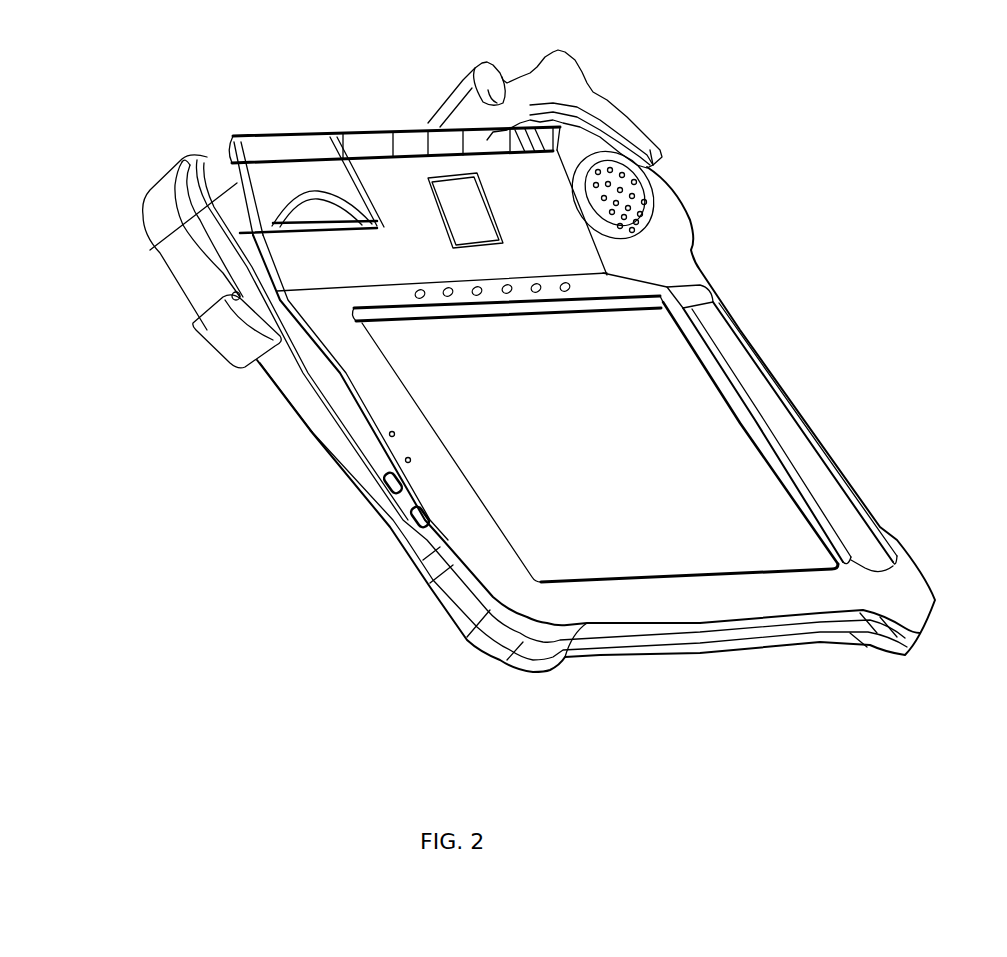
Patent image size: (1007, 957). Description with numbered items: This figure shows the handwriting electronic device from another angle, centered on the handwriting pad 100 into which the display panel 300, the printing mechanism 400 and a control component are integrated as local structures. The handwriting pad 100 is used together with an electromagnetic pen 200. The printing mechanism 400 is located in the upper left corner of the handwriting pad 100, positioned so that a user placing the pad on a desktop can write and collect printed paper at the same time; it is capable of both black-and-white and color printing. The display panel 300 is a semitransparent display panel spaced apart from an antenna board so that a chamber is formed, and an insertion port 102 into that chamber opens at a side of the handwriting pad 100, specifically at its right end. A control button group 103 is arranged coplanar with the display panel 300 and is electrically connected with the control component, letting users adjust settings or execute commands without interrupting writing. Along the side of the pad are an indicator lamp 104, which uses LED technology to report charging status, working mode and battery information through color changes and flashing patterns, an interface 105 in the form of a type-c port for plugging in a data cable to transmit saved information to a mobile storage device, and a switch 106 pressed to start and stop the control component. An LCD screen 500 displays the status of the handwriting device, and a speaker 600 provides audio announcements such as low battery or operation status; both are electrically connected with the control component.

The handwriting pad 100 is at (173, 228).
The insertion port 102 is at (790, 443).
The control button group 103 is at (568, 284).
The indicator lamp 104 is at (388, 434).
The interface 105 is at (385, 488).
The switch 106 is at (411, 531).
The electromagnetic pen 200 is at (388, 130).
The display panel 300 is at (625, 540).
The printing mechanism 400 is at (264, 187).
The LCD screen 500 is at (458, 200).
The speaker 600 is at (577, 200).